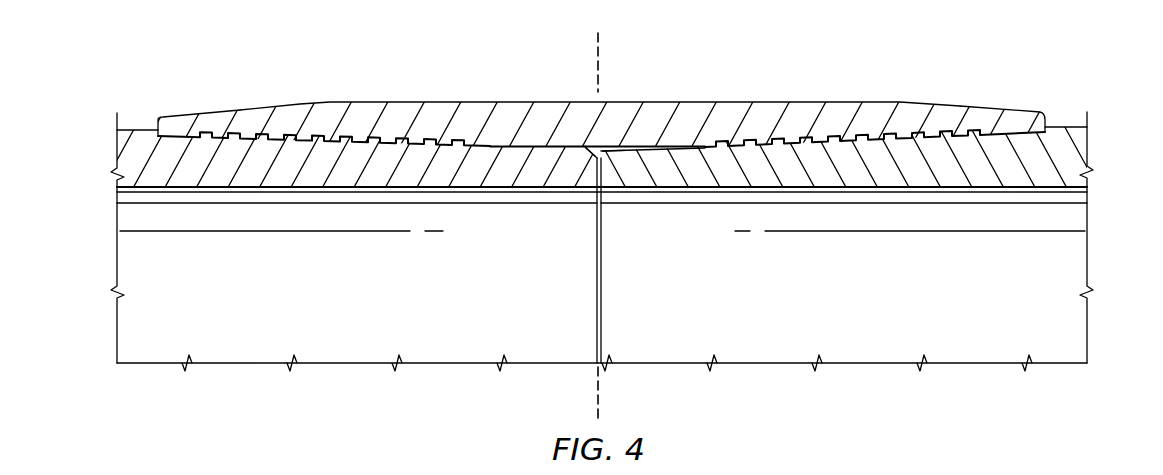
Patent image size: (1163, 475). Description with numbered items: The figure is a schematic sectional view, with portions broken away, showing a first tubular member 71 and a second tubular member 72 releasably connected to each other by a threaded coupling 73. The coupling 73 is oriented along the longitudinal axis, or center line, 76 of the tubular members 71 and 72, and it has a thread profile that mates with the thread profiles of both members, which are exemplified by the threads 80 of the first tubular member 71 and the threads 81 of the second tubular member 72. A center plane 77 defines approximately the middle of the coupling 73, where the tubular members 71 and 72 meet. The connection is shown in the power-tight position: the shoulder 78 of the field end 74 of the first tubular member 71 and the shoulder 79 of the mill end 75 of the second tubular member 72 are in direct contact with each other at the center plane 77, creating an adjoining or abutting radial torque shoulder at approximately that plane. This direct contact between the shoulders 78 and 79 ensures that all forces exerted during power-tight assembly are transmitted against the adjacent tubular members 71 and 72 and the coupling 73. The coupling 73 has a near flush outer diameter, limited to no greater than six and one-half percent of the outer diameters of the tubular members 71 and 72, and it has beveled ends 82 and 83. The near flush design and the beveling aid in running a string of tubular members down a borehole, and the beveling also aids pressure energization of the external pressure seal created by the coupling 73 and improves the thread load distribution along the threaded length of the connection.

The first tubular member 71 is at (108, 155).
The second tubular member 72 is at (1097, 153).
The threaded coupling 73 is at (455, 112).
The field end 74 is at (530, 166).
The mill end 75 is at (651, 170).
The longitudinal axis 76 is at (369, 286).
The center plane 77 is at (596, 60).
The shoulder 78 is at (588, 172).
The shoulder 79 is at (616, 171).
The threads 80 is at (489, 150).
The threads 81 is at (717, 148).
The beveled end 82 is at (232, 93).
The beveled end 83 is at (980, 93).